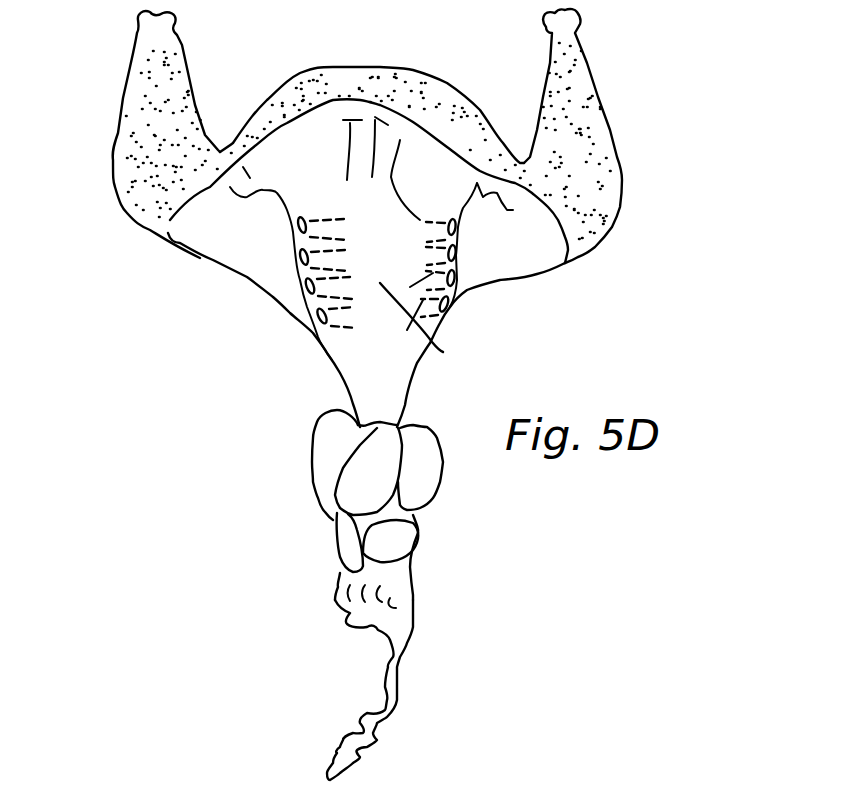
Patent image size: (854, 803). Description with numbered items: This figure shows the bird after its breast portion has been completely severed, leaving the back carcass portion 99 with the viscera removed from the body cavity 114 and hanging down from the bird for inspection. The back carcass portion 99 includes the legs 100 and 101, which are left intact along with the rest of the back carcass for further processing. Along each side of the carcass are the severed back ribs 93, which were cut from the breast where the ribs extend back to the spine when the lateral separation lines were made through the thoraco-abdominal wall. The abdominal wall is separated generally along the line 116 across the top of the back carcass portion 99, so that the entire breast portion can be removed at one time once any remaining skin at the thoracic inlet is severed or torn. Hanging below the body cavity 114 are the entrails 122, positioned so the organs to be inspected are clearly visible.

The leg 100 is at (160, 80).
The leg 101 is at (577, 108).
The separation line along abdominal wall 116 is at (329, 100).
The back carcass portion 99 is at (416, 135).
The back ribs 93 is at (300, 253).
The body cavity 114 is at (442, 328).
The viscera 122 is at (310, 474).